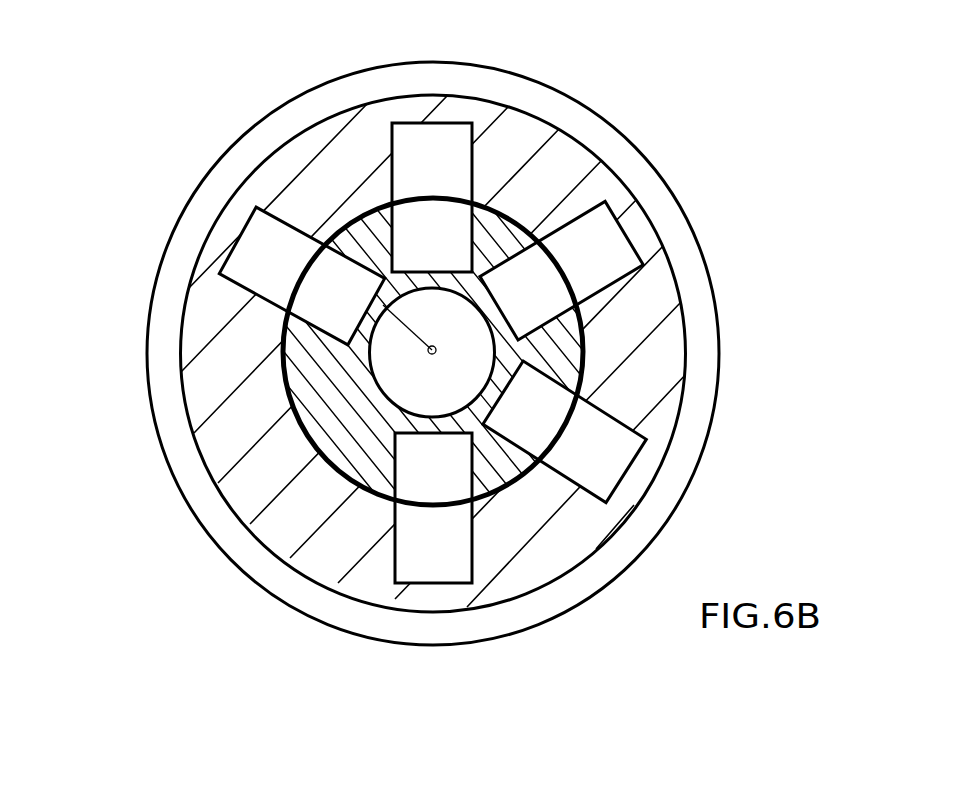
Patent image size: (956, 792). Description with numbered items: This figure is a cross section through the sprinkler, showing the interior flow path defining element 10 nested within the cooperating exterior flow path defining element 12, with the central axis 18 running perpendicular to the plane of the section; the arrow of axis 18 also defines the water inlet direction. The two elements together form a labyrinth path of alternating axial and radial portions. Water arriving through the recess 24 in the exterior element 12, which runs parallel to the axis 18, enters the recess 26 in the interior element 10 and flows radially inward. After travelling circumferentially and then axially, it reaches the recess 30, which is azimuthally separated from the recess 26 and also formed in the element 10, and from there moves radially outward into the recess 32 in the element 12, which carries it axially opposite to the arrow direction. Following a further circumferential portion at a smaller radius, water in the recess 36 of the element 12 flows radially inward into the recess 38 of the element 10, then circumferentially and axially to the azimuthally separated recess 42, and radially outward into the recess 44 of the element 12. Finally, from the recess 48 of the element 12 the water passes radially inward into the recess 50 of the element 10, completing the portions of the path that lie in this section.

The interior flow path defining element 10 is at (320, 390).
The exterior flow path defining element 12 is at (217, 517).
The axis 18 is at (355, 295).
The recess 24 is at (423, 543).
The recess 26 is at (420, 473).
The recess 30 is at (583, 383).
The recess 32 is at (607, 453).
The recess 36 is at (585, 250).
The recess 38 is at (535, 287).
The recess 42 is at (438, 234).
The recess 44 is at (440, 138).
The recess 48 is at (273, 242).
The recess 50 is at (333, 298).